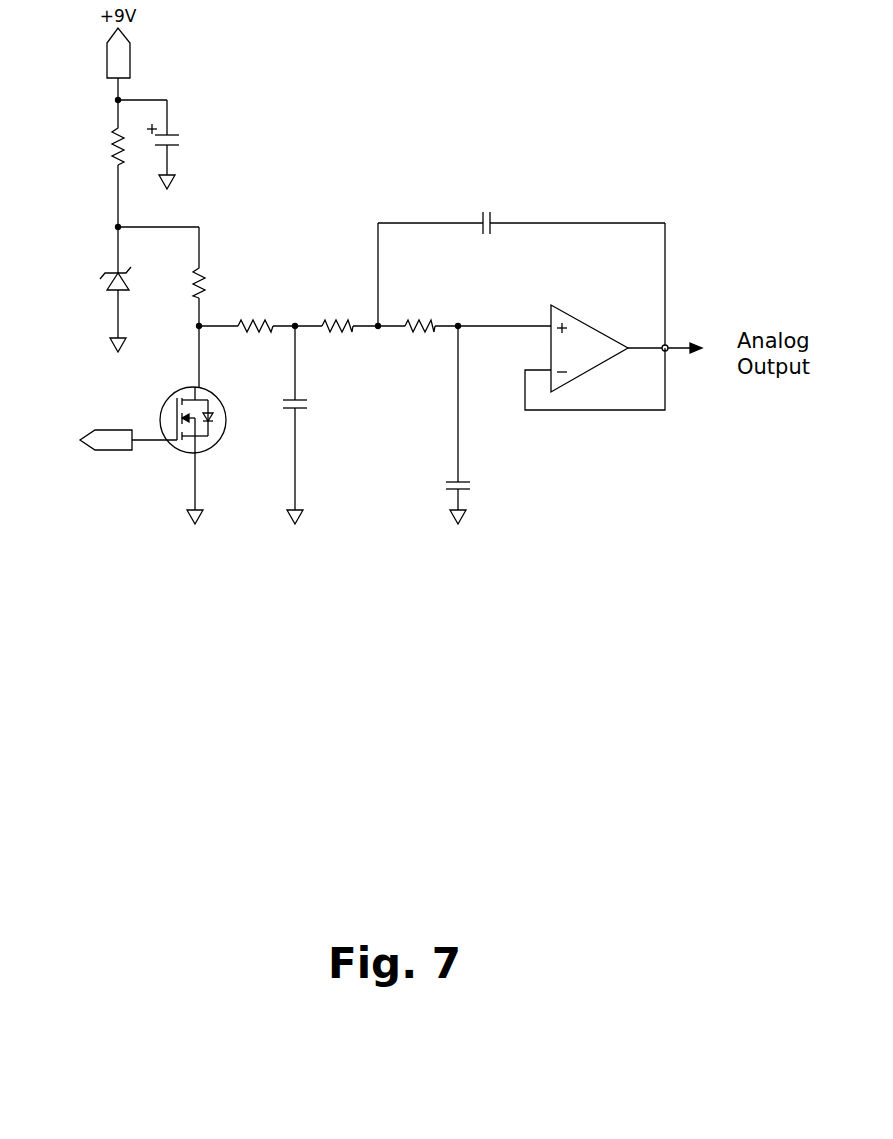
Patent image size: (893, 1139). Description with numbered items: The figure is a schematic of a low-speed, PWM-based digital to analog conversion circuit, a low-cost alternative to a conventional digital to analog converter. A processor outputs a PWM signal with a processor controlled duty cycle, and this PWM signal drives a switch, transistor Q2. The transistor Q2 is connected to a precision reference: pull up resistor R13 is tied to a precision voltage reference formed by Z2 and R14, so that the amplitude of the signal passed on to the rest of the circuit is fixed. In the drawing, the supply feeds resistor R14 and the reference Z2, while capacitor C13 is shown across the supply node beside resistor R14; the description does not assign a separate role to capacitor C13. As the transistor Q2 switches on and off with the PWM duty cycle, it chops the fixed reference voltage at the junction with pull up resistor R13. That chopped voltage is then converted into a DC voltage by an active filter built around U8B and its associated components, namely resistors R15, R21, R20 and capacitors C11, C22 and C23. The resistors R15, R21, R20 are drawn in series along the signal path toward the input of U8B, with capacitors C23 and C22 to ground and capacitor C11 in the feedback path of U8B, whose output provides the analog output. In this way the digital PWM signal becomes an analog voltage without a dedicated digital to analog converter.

The resistor R14 is at (98, 143).
The capacitor 10 uF 25V C13 is at (189, 144).
The precision voltage reference Z2 is at (81, 289).
The pull up resistor R13 is at (178, 278).
The resistor R15 is at (258, 331).
The resistor R21 is at (340, 329).
The resistor R20 is at (422, 329).
The capacitor C23 is at (323, 425).
The capacitor C22 is at (424, 425).
The capacitor C11 is at (521, 269).
The transistor Q2 is at (176, 455).
The active filter amplifier U8B is at (613, 357).